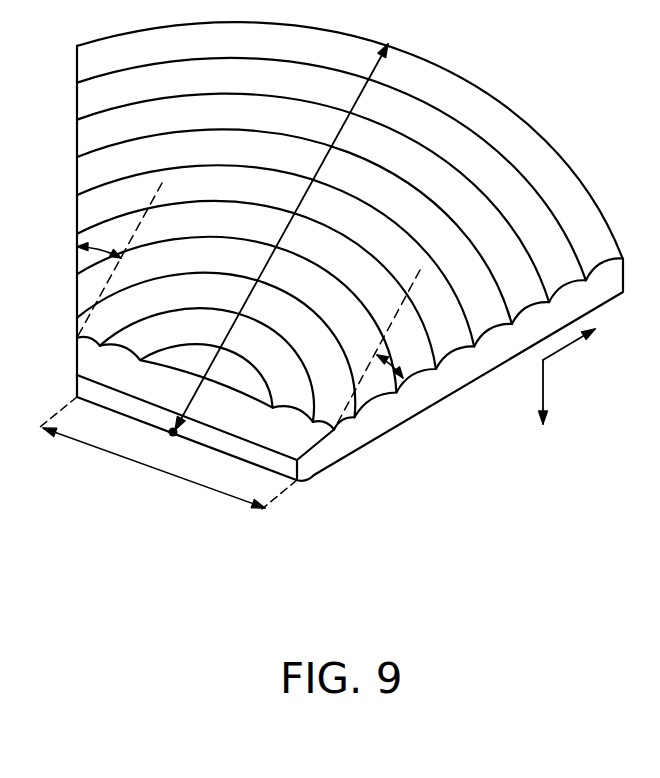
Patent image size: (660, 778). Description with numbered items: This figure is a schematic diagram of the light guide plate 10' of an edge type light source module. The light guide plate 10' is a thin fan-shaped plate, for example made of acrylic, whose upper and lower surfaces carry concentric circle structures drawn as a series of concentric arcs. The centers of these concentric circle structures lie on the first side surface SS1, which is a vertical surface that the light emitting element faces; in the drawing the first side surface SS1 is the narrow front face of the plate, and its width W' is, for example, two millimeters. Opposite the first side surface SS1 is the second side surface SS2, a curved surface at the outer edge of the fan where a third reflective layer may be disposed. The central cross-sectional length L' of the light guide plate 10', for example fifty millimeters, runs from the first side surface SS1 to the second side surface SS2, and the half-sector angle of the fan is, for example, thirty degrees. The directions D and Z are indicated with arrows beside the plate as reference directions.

The light guide plate 10' is at (358, 284).
The first side surface SS1 is at (276, 462).
The second side surface SS2 is at (548, 138).
The central cross-sectional length L' is at (279, 240).
The width of the first side surface W' is at (168, 453).
The direction D is at (582, 338).
The direction Z is at (545, 411).